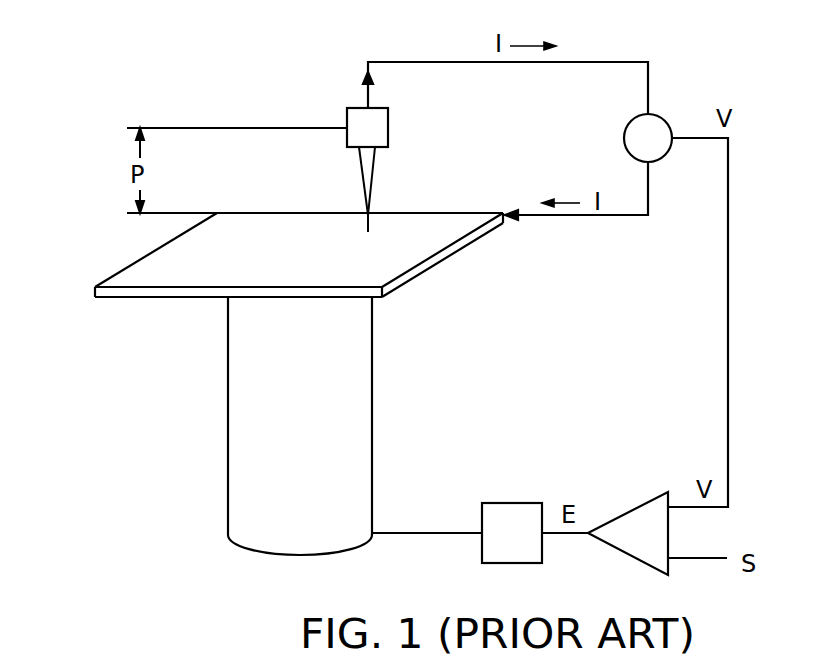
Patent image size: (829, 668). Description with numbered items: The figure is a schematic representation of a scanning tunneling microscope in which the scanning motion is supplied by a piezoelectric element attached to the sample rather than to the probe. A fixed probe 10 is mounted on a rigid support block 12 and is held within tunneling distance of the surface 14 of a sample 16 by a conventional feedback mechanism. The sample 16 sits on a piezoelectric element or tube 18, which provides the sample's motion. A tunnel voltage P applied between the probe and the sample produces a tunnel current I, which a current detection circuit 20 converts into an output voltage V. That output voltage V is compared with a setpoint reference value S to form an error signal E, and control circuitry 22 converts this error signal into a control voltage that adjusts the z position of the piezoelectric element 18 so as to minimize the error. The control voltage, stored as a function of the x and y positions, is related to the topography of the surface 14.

The fixed probe 10 is at (372, 168).
The rigid support block 12 is at (380, 130).
The surface 14 is at (438, 222).
The sample 16 is at (450, 253).
The piezoelectric element 18 is at (352, 402).
The current detection circuit 20 is at (652, 132).
The control circuitry 22 is at (515, 520).